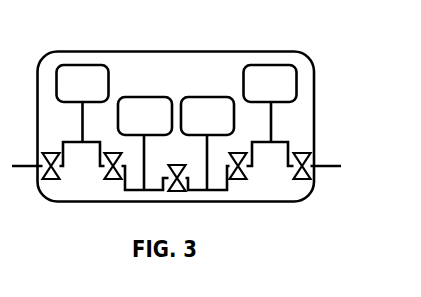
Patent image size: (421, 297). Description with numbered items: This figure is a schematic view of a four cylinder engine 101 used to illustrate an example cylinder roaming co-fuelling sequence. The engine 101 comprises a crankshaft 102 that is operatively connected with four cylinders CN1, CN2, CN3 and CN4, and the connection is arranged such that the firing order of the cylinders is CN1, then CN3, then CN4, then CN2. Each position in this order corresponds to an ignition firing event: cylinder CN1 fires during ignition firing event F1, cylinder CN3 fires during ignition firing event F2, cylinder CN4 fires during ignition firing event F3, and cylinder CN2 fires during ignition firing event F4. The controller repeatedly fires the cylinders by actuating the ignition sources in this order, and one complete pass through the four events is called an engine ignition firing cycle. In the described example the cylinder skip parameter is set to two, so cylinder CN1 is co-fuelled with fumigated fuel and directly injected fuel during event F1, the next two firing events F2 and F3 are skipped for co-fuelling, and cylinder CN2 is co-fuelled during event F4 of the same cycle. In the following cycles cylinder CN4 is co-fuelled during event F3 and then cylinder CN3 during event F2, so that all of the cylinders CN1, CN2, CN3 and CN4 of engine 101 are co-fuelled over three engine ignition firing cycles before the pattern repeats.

The engine 101 is at (316, 73).
The crankshaft 102 is at (341, 166).
The ignition firing event F1 is at (83, 86).
The ignition firing event F2 is at (207, 110).
The ignition firing event F3 is at (270, 86).
The ignition firing event F4 is at (145, 110).
The cylinder CN1 is at (83, 83).
The cylinder CN2 is at (145, 116).
The cylinder CN3 is at (207, 116).
The cylinder CN4 is at (270, 83).